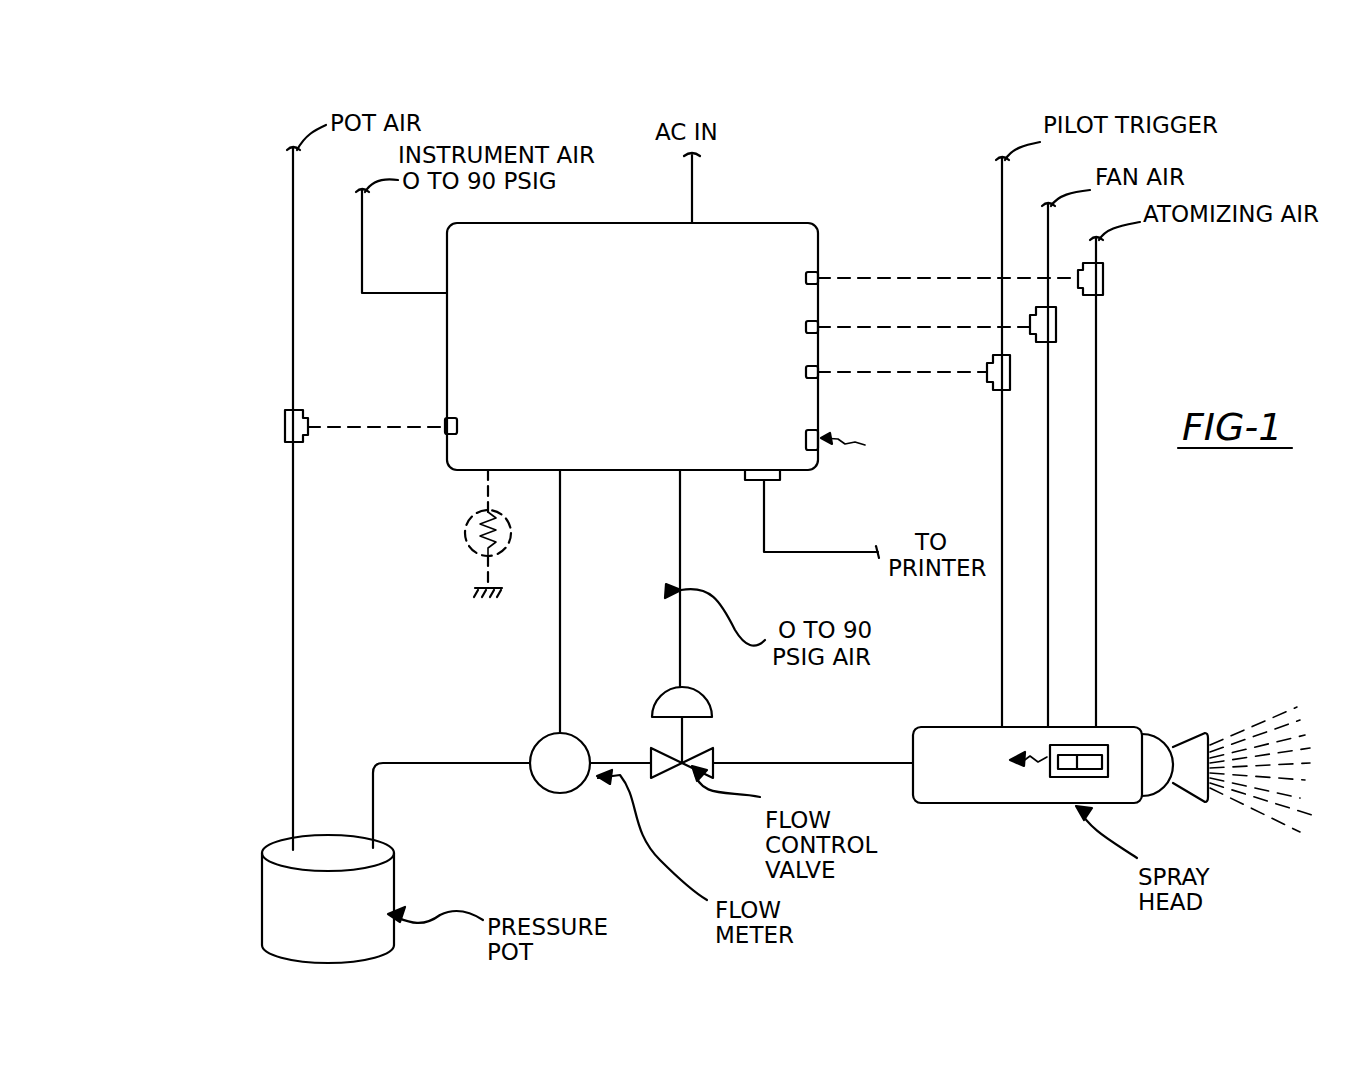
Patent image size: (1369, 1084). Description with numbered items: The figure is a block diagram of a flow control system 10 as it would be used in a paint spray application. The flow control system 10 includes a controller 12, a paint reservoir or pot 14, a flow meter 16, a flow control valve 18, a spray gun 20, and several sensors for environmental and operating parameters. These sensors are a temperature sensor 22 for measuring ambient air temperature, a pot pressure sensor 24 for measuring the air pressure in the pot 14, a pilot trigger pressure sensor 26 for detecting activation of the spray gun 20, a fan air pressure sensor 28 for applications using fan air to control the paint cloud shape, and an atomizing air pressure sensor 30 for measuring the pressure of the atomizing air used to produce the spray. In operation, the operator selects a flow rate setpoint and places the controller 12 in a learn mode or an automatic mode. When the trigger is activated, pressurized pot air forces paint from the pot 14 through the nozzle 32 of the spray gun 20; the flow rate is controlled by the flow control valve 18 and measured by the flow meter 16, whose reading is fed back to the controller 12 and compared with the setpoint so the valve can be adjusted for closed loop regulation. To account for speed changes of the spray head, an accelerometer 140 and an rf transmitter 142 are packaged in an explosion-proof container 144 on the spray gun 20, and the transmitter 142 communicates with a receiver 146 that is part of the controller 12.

The flow control system 10 is at (222, 318).
The controller 12 is at (626, 370).
The paint reservoir or pot 14 is at (398, 862).
The flow meter 16 is at (532, 748).
The flow control valve 18 is at (715, 758).
The spray gun 20 is at (1112, 751).
The temperature sensor 22 is at (466, 522).
The pot pressure sensor 24 is at (451, 418).
The pilot trigger pressure sensor 26 is at (806, 378).
The fan air pressure sensor 28 is at (806, 321).
The atomizing air pressure sensor 30 is at (812, 272).
The nozzle 32 is at (1188, 730).
The accelerometer 140 is at (1093, 758).
The rf transmitter 142 is at (1062, 758).
The explosion-proof container 144 is at (1095, 787).
The receiver 146 is at (818, 452).